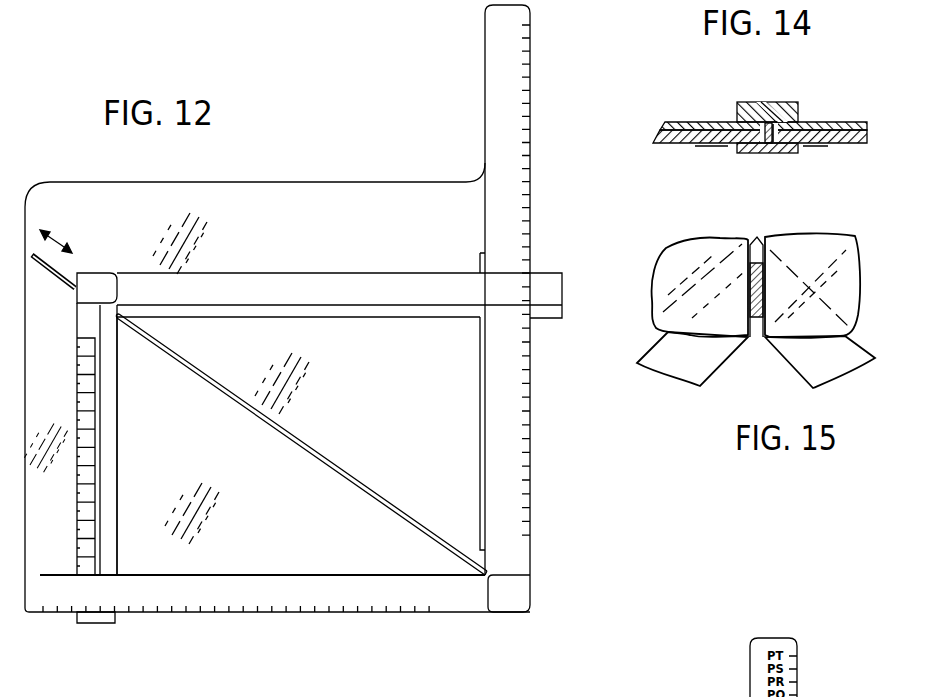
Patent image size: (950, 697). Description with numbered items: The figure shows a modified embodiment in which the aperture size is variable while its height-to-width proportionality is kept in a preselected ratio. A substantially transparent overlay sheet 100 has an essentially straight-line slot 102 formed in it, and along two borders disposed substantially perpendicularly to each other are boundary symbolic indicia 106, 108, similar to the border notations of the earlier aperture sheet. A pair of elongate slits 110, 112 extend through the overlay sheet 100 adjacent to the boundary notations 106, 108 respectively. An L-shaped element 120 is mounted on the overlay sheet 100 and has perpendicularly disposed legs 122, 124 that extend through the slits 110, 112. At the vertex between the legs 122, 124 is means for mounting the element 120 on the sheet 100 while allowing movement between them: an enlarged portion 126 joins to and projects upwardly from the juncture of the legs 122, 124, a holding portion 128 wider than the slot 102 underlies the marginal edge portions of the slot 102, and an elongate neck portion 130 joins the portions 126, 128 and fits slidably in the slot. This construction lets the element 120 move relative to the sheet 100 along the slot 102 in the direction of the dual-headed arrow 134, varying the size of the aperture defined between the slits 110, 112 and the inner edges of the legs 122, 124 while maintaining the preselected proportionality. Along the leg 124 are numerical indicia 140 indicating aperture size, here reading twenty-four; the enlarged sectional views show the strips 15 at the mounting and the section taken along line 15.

In FIG. 12, the overlay sheet 100 is at (468, 456).
In FIG. 14, the overlay sheet 100 is at (852, 143).
In FIG. 15, the overlay sheet 100 is at (725, 325).
In FIG. 12, the slot 102 is at (332, 466).
In FIG. 12, the boundary symbolic indicia 106 is at (537, 236).
In FIG. 12, the boundary symbolic indicia 108 is at (231, 618).
In FIG. 12, the elongate slit 110 is at (480, 380).
In FIG. 12, the elongate slit 112 is at (245, 573).
In FIG. 14, the elongate slit 112 is at (775, 138).
In FIG. 15, the elongate slit 112 is at (759, 335).
In FIG. 12, the L-shaped element 120 is at (397, 290).
In FIG. 12, the leg 122 is at (291, 281).
In FIG. 14, the leg 122 is at (700, 122).
In FIG. 15, the leg 122 is at (698, 365).
In FIG. 12, the leg 124 is at (110, 418).
In FIG. 14, the leg 124 is at (838, 122).
In FIG. 15, the leg 124 is at (837, 365).
In FIG. 12, the enlarged portion 126 is at (95, 285).
In FIG. 14, the enlarged portion 126 is at (767, 102).
In FIG. 14, the holding portion 128 is at (748, 153).
In FIG. 14, the neck portion 130 is at (767, 143).
In FIG. 15, the neck portion 130 is at (758, 272).
In FIG. 12, the dual-headed arrow 134 is at (57, 245).
In FIG. 12, the numbered scale 140 is at (77, 507).
In FIG. 14, the adhesive strips 15 is at (708, 155).